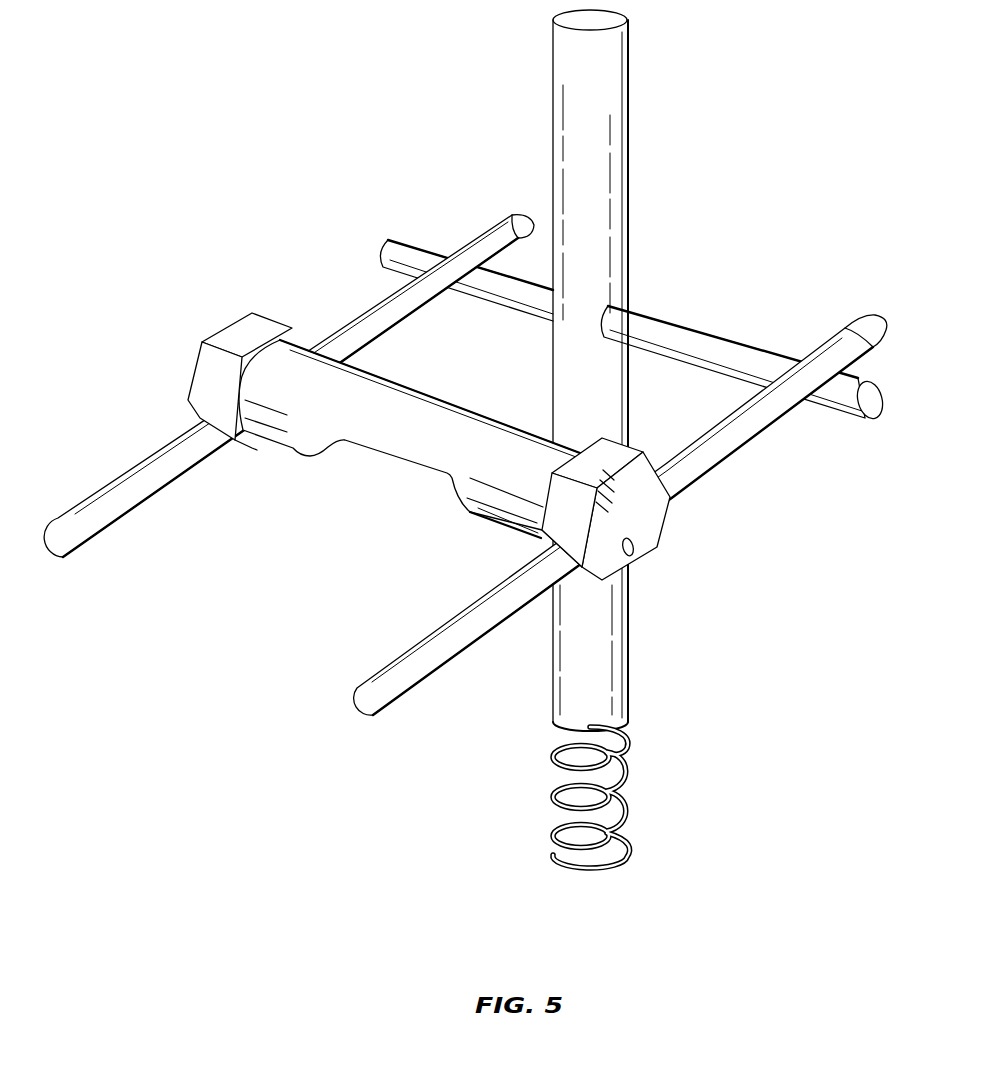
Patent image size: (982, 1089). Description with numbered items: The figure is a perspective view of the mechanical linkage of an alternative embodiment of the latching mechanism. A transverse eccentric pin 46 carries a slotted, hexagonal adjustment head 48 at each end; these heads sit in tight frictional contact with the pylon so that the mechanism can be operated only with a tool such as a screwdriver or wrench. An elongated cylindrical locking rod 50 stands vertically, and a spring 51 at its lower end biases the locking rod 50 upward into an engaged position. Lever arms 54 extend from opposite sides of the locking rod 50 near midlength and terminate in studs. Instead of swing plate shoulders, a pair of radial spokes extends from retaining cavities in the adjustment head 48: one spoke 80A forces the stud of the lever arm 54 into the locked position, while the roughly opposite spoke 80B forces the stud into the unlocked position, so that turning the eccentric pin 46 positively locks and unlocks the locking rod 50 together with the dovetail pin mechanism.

The eccentric pin 46 is at (418, 405).
The adjustment head 48 is at (240, 328).
The locking rod 50 is at (607, 69).
The spring 51 is at (630, 773).
The lever arm 54 is at (703, 333).
The spoke 80A is at (80, 537).
The spoke 80B is at (483, 237).